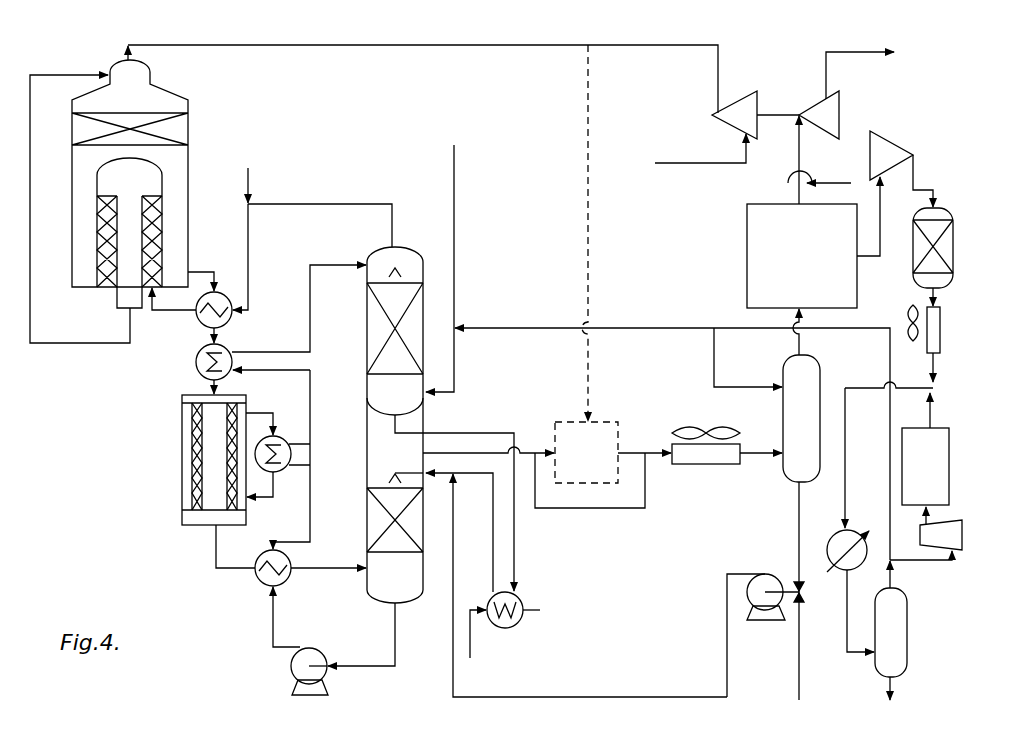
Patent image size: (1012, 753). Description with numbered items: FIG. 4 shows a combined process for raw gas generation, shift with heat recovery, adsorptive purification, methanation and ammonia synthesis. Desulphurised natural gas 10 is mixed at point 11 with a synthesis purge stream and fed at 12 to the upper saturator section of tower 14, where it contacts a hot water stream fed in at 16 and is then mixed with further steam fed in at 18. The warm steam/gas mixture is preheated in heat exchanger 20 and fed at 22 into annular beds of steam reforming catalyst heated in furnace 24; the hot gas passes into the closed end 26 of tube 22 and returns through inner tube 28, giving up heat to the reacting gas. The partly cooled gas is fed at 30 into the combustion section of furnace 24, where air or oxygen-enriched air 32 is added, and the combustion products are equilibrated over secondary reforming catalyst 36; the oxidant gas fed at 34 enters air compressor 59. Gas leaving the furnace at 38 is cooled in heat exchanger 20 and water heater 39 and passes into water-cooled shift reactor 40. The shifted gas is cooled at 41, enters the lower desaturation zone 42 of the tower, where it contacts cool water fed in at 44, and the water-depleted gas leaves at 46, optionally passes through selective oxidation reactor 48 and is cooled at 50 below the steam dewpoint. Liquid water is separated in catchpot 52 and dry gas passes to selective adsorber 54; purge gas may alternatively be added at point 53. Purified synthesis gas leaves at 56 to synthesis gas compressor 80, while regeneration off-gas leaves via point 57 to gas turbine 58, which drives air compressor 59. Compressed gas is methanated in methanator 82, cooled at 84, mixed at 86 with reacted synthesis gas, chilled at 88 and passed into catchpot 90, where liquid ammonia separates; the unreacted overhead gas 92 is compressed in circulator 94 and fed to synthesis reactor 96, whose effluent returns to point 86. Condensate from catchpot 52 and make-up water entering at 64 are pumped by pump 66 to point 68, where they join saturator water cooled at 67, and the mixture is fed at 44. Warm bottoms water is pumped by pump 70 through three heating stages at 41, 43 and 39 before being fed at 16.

The desulphurised natural gas 10 is at (454, 148).
The mixing point 11 is at (482, 314).
The saturator feed point 12 is at (440, 392).
The tower 14 is at (367, 452).
The hot water feed point 16 is at (366, 270).
The steam feed 18 is at (248, 183).
The heat exchanger 20 is at (228, 322).
The reformer tube 22 is at (152, 298).
The furnace 24 is at (188, 148).
The closed end 26 is at (141, 188).
The inner tube 28 is at (130, 328).
The combustion section feed point 30 is at (66, 62).
The air or oxygen-enriched air 32 is at (152, 50).
The oxidant gas feed 34 is at (588, 52).
The secondary reforming catalyst 36 is at (130, 129).
The furnace outlet 38 is at (207, 266).
The water heater 39 is at (200, 376).
The water-cooled shift reactor 40 is at (182, 505).
The heat exchanger 41 is at (262, 584).
The desaturation zone of tower 42 is at (366, 598).
The heat exchanger 43 is at (285, 470).
The cool water feed point 44 is at (406, 472).
The column side outlet line 46 is at (430, 450).
The selective oxidation reactor 48 is at (598, 465).
The cooler 50 is at (706, 464).
The catchpot 52 is at (793, 480).
The purge gas addition point 53 is at (752, 374).
The selective adsorber 54 is at (813, 268).
The synthesis gas outlet 56 is at (875, 232).
The regeneration off-gas outlet 57 is at (812, 160).
The gas turbine 58 is at (809, 108).
The air compressor 59 is at (720, 125).
The make-up water feed point 64 is at (813, 592).
The pump 66 is at (768, 620).
The cooler 67 is at (519, 598).
The water junction point 68 is at (455, 515).
The pump 70 is at (292, 688).
The synthesis gas compressor 80 is at (896, 142).
The methanator 82 is at (953, 248).
The cooler 84 is at (940, 332).
The mixing point 86 is at (934, 386).
The chiller 88 is at (840, 532).
The catchpot 90 is at (907, 652).
The vapor line 92 is at (892, 566).
The circulator 94 is at (962, 532).
The synthesis reactor 96 is at (939, 483).